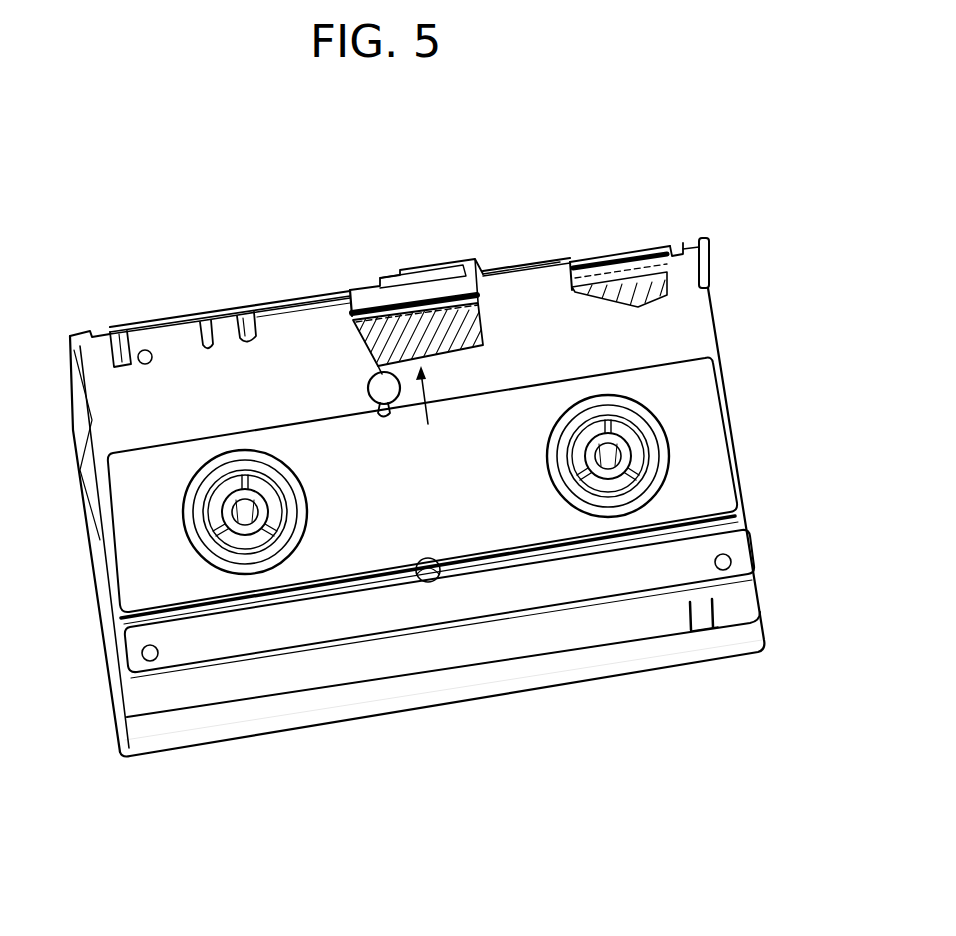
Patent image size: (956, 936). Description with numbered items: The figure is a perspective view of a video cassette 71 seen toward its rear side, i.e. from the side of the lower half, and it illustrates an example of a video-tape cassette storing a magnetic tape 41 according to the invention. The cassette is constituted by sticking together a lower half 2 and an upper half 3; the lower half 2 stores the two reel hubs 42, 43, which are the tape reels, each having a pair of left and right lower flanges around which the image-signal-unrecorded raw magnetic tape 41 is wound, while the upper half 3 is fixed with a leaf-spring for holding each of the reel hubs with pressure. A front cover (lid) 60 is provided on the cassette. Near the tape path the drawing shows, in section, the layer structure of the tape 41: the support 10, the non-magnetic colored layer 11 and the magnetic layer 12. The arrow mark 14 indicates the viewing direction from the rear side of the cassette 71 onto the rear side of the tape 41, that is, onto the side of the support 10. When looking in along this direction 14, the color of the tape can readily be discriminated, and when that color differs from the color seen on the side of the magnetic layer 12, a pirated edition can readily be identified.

The lower half 2 is at (747, 592).
The upper half 3 is at (750, 640).
The support 10 is at (472, 333).
The non-magnetic colored layer 11 is at (478, 298).
The magnetic layer 12 is at (437, 303).
The direction 14 is at (428, 412).
The magnetic tape 41 is at (407, 300).
The reel hub 42 is at (292, 480).
The reel hub 43 is at (658, 425).
The front cover (lid) 60 is at (645, 243).
The video cassette 71 is at (203, 307).